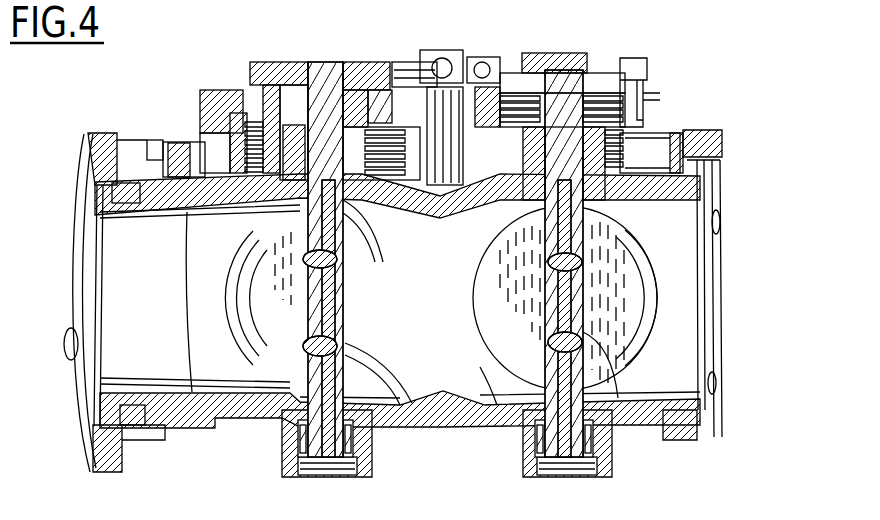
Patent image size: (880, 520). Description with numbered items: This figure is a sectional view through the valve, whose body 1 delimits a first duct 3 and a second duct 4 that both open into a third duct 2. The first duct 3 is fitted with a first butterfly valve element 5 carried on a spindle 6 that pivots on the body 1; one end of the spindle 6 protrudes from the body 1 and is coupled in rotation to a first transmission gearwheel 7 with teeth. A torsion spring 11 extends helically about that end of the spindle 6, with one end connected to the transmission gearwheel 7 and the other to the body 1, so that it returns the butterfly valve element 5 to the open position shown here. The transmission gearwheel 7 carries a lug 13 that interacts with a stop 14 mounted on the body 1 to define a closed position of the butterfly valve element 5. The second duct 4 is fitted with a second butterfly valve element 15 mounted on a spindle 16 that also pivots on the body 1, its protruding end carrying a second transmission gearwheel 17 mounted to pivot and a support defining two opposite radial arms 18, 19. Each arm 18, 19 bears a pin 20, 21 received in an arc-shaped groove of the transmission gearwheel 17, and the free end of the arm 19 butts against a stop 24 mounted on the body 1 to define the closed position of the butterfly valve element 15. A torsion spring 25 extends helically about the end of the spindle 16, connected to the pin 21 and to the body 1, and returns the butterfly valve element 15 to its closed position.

The body 1 is at (727, 125).
The third duct 2 is at (380, 373).
The first duct 3 is at (687, 312).
The second duct 4 is at (110, 343).
The first butterfly valve element 5 is at (510, 360).
The spindle 6 is at (582, 332).
The first transmission gearwheel 7 is at (487, 57).
The torsion spring 11 is at (623, 128).
The lug 13 is at (653, 57).
The stop 14 is at (507, 62).
The second butterfly valve element 15 is at (277, 350).
The spindle 16 is at (373, 410).
The transmission gearwheel 17 is at (213, 90).
The arm 18 is at (307, 62).
The arm 19 is at (352, 70).
The pin 20 is at (267, 62).
The pin 21 is at (378, 63).
The stop 24 is at (400, 60).
The torsion spring 25 is at (213, 130).